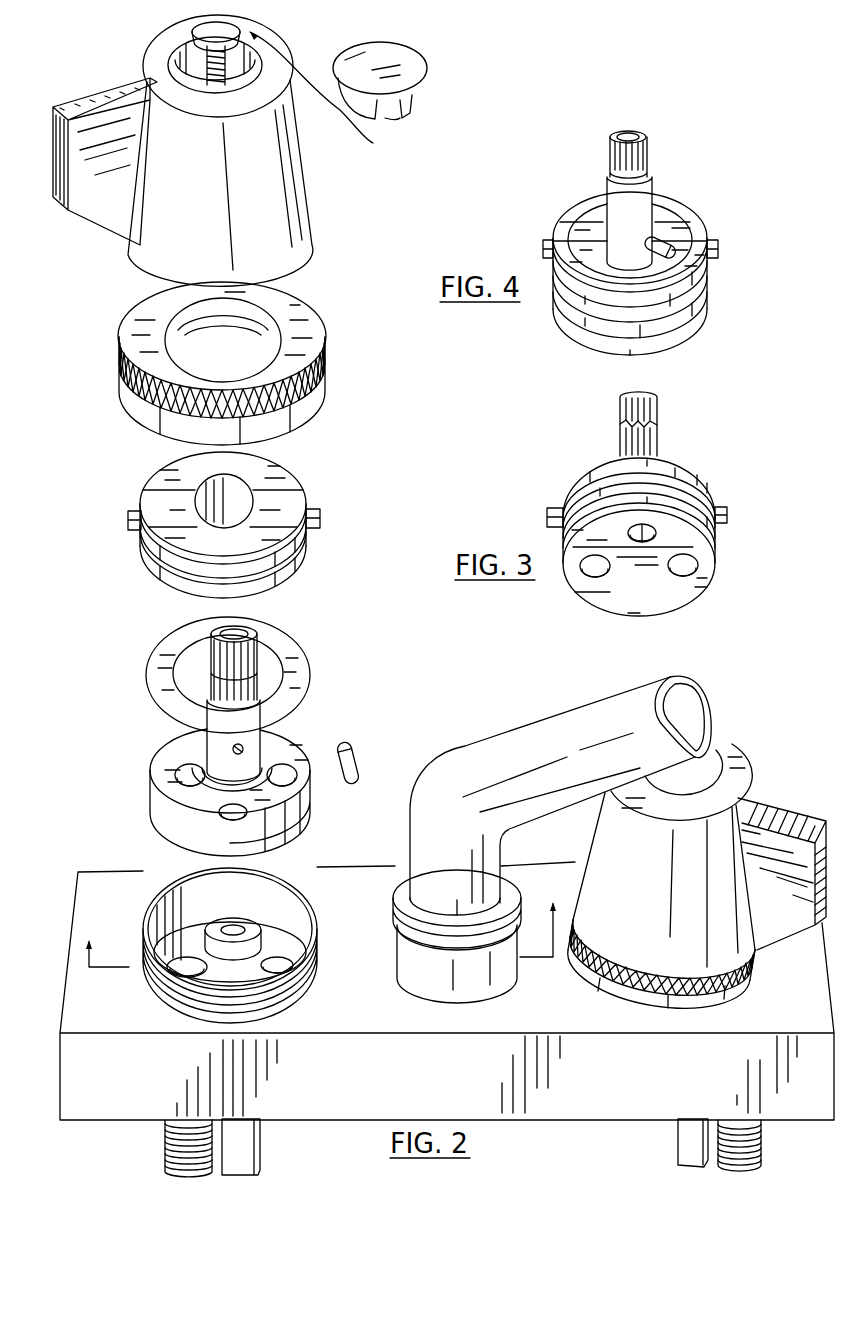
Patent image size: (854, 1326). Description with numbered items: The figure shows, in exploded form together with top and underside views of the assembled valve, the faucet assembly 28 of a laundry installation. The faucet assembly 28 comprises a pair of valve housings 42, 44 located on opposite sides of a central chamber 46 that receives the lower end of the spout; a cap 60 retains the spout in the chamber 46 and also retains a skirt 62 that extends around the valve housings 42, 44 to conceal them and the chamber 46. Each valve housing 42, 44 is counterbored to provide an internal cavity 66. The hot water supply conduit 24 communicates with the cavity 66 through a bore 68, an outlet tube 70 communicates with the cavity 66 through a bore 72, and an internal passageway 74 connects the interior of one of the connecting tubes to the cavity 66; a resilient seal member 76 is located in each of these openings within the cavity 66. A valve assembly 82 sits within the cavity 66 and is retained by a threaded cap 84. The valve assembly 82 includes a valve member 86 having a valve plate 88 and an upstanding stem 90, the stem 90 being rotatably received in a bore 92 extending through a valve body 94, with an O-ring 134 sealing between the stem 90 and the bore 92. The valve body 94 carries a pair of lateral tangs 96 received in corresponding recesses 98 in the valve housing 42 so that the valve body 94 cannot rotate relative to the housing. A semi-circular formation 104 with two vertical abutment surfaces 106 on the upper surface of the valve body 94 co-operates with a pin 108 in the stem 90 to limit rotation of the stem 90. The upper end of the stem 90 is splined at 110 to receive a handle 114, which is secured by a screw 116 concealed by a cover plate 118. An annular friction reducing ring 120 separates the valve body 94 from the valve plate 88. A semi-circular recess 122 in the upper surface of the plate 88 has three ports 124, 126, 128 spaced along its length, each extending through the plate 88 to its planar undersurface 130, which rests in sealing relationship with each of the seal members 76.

In FIG. 2, the hot water supply conduit 24 is at (262, 1152).
In FIG. 2, the faucet assembly 28 is at (462, 730).
In FIG. 2, the valve housing 42 is at (140, 893).
In FIG. 2, the valve housing 44 is at (757, 979).
In FIG. 2, the central chamber 46 is at (492, 980).
In FIG. 2, the cap 60 is at (454, 942).
In FIG. 2, the skirt 62 is at (810, 1115).
In FIG. 2, the internal cavity 66 is at (228, 933).
In FIG. 2, the bore 68 is at (232, 933).
In FIG. 2, the outlet tube 70 is at (163, 1168).
In FIG. 2, the bore 72 is at (173, 967).
In FIG. 2, the internal passageway 74 is at (287, 967).
In FIG. 2, the resilient seal member 76 is at (150, 930).
In FIG. 4, the valve assembly 82 is at (623, 243).
In FIG. 3, the valve assembly 82 is at (632, 517).
In FIG. 2, the threaded cap 84 is at (300, 405).
In FIG. 2, the valve member 86 is at (187, 757).
In FIG. 2, the valve plate 88 is at (242, 781).
In FIG. 2, the stem 90 is at (263, 700).
In FIG. 2, the bore 92 is at (220, 513).
In FIG. 2, the valve body 94 is at (150, 493).
In FIG. 2, the lateral tangs 96 is at (320, 518).
In FIG. 4, the lateral tangs 96 is at (715, 253).
In FIG. 2, the recesses 98 is at (317, 925).
In FIG. 2, the semi-circular formation 104 is at (187, 473).
In FIG. 4, the semi-circular formation 104 is at (593, 210).
In FIG. 2, the vertical abutment surfaces 106 is at (140, 517).
In FIG. 4, the vertical abutment surfaces 106 is at (587, 231).
In FIG. 2, the pin 108 is at (357, 760).
In FIG. 4, the pin 108 is at (663, 252).
In FIG. 2, the splined upper end of stem 110 is at (253, 658).
In FIG. 2, the handle 114 is at (300, 180).
In FIG. 2, the screw 116 is at (192, 33).
In FIG. 2, the cover plate 118 is at (410, 73).
In FIG. 2, the annular friction reducing ring 120 is at (162, 645).
In FIG. 2, the semi-circular recess 122 is at (262, 802).
In FIG. 2, the port 124 is at (183, 787).
In FIG. 3, the port 124 is at (597, 568).
In FIG. 2, the port 126 is at (233, 817).
In FIG. 3, the port 126 is at (655, 533).
In FIG. 2, the port 128 is at (280, 788).
In FIG. 3, the port 128 is at (685, 572).
In FIG. 3, the undersurface 130 is at (660, 607).
In FIG. 2, the O-ring 134 is at (247, 767).